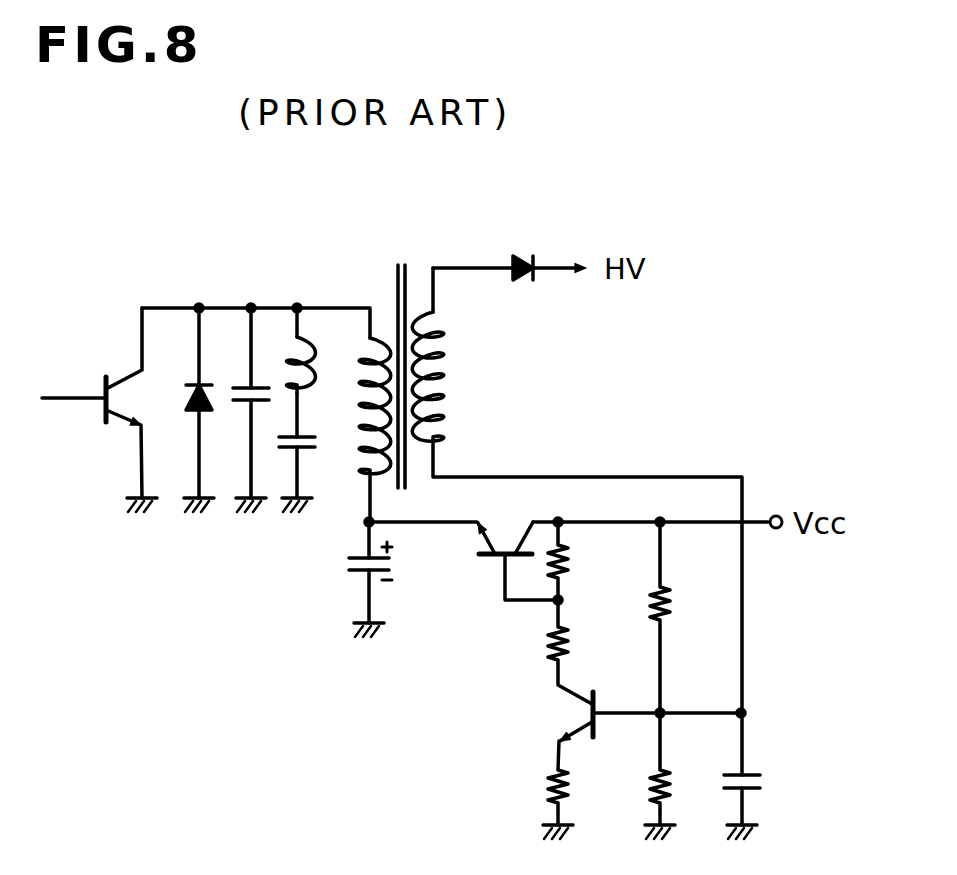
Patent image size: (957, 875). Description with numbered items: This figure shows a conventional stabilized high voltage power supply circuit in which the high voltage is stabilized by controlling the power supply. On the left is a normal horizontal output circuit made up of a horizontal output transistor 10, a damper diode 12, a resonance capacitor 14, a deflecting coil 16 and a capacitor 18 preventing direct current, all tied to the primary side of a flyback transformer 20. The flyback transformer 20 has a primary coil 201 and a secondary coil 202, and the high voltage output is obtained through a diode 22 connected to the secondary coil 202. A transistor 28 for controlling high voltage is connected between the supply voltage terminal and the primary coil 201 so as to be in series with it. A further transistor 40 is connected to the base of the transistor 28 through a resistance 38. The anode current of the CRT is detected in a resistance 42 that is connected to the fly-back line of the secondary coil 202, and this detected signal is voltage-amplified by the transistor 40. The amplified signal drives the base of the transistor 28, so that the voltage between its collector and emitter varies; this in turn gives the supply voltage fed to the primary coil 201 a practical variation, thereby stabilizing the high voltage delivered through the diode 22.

The horizontal output transistor 10 is at (95, 408).
The damper diode 12 is at (175, 397).
The resonance capacitor 14 is at (238, 408).
The deflecting coil 16 is at (325, 378).
The capacitor preventing direct current 18 is at (303, 430).
The flyback transformer 20 is at (403, 256).
The primary coil 201 is at (353, 437).
The secondary coil 202 is at (450, 373).
The diode 22 is at (527, 250).
The transistor for controlling high voltage 28 is at (487, 565).
The resistance 38 is at (575, 643).
The transistor 40 is at (567, 715).
The resistance 42 is at (678, 795).